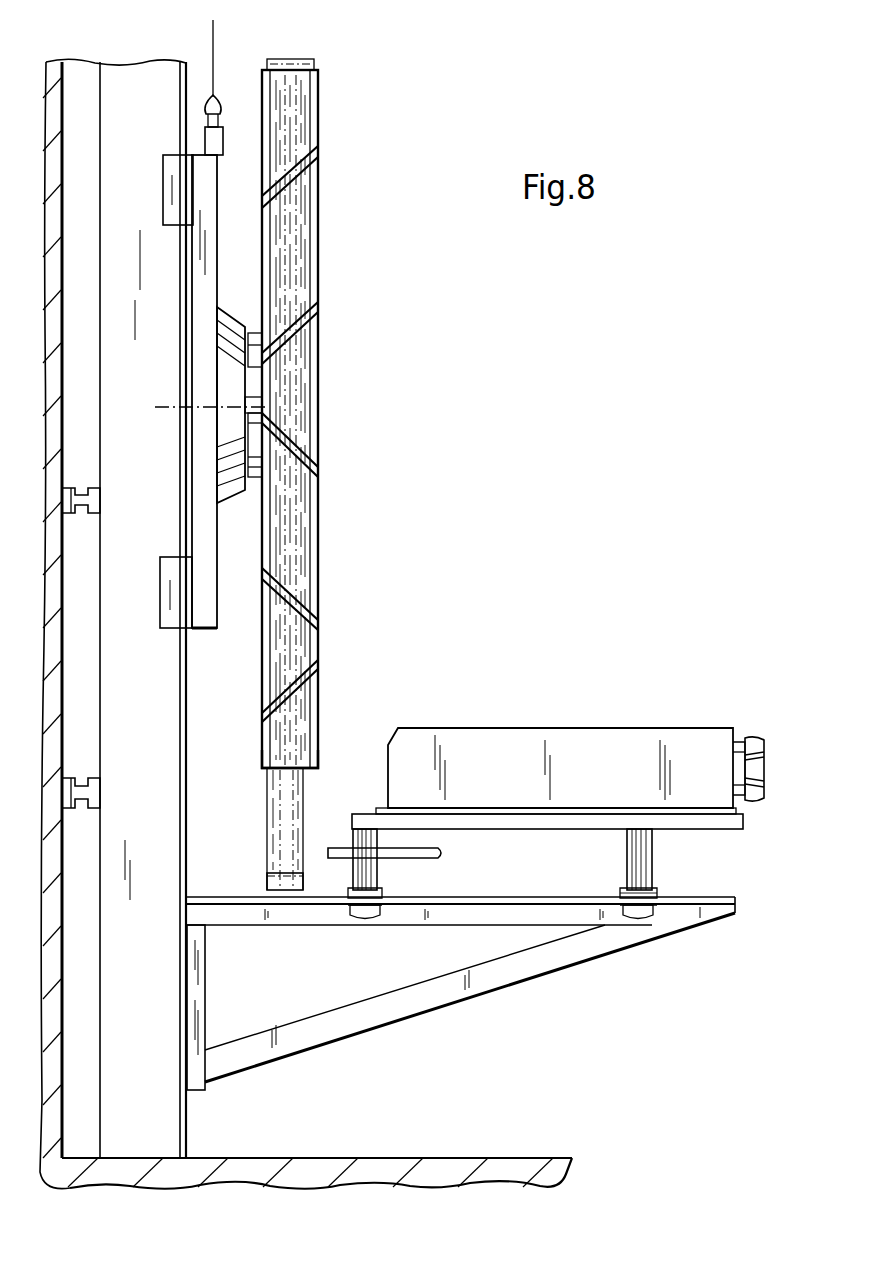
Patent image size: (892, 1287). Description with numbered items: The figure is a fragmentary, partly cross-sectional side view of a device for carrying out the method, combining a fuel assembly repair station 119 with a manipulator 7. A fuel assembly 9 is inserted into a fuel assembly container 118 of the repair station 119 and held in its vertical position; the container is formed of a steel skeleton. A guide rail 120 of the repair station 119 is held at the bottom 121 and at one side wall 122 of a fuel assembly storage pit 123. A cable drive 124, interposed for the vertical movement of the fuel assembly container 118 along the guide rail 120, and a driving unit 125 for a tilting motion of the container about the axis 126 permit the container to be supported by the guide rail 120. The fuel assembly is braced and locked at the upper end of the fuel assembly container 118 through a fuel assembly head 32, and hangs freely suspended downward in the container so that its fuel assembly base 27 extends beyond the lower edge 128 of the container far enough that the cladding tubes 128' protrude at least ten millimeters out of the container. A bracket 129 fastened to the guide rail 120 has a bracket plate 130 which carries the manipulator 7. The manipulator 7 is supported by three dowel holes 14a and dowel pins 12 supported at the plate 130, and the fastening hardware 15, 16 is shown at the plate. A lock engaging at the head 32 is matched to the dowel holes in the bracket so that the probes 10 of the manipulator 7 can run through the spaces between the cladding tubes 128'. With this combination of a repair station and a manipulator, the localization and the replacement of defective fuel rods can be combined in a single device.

The manipulator 7 is at (657, 722).
The fuel assembly 9 is at (320, 68).
The probes 10 is at (339, 850).
The dowel pins 12 is at (648, 853).
The dowel holes 14a is at (622, 897).
The washer 15 is at (655, 915).
The lower nut 16 is at (638, 920).
The fuel assembly base 27 is at (266, 877).
The fuel assembly head 32 is at (279, 58).
The fuel assembly container 118 is at (313, 293).
The fuel assembly repair station 119 is at (205, 672).
The guide rail 120 is at (184, 796).
The bottom 121 is at (572, 1166).
The side wall 122 is at (50, 1135).
The fuel assembly storage pit 123 is at (498, 516).
The cable drive 124 is at (214, 84).
The driving unit 125 is at (236, 500).
The axis 126 is at (164, 405).
The lower edge 128 is at (319, 756).
The cladding tubes 128' is at (259, 829).
The bracket 129 is at (197, 985).
The bracket plate 130 is at (690, 898).